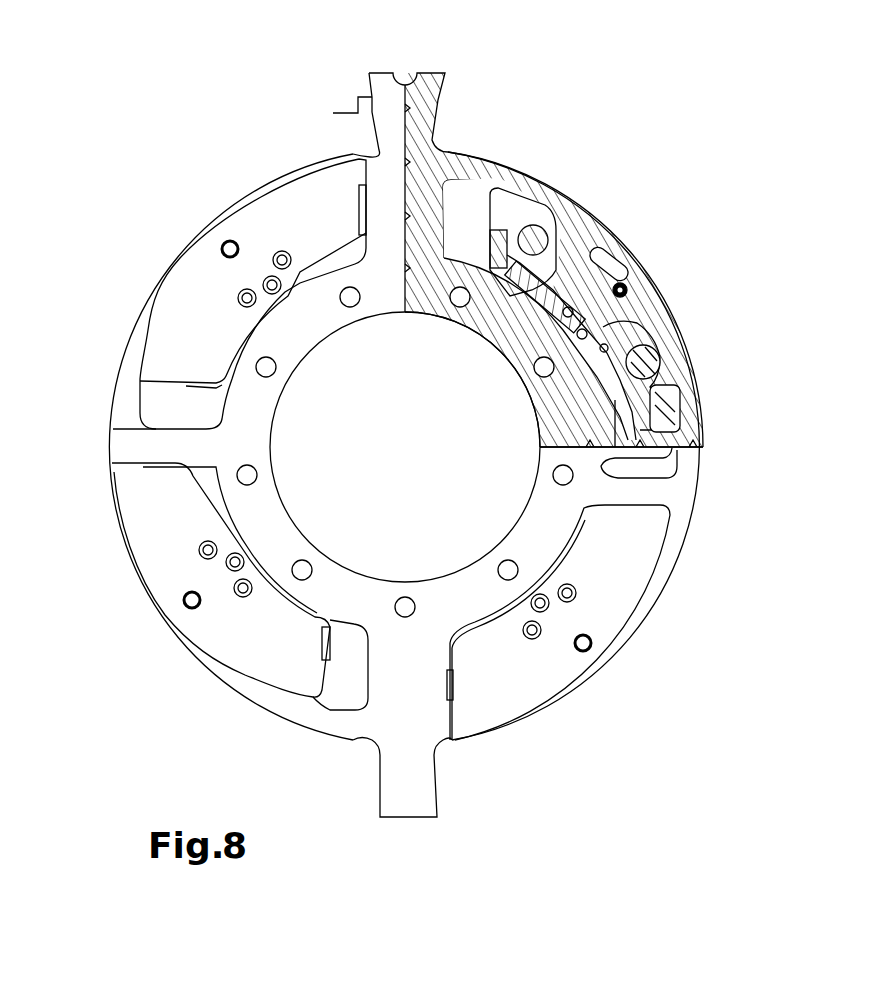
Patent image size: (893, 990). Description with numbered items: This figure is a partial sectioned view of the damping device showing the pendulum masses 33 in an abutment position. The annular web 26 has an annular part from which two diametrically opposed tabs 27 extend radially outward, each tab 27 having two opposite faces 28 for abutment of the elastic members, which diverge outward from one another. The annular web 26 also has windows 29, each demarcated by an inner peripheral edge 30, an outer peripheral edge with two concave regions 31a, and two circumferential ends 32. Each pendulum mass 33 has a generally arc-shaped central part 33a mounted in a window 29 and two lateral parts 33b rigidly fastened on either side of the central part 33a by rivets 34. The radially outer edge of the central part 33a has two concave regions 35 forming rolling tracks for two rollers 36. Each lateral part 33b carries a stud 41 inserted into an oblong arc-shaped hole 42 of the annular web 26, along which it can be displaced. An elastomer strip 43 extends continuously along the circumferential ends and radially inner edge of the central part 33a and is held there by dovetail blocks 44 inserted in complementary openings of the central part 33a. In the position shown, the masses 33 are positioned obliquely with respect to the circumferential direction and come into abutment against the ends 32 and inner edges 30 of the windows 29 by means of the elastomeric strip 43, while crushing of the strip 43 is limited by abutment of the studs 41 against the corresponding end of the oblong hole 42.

The annular web 26 is at (500, 323).
The tab 27 is at (441, 72).
The face 28 is at (333, 113).
The window 29 is at (153, 412).
The inner peripheral edge 30 is at (557, 403).
The concave region 31a is at (667, 323).
The circumferential end 32 is at (678, 474).
The pendulum mass 33 is at (228, 187).
The central part 33a is at (605, 335).
The lateral part 33b is at (642, 547).
The rivet 34 is at (547, 247).
The concave region 35 is at (682, 397).
The roller 36 is at (652, 362).
The stud 41 is at (620, 283).
The oblong arc-shaped hole 42 is at (607, 257).
The elastomer strip 43 is at (480, 217).
The dovetail block 44 is at (672, 458).